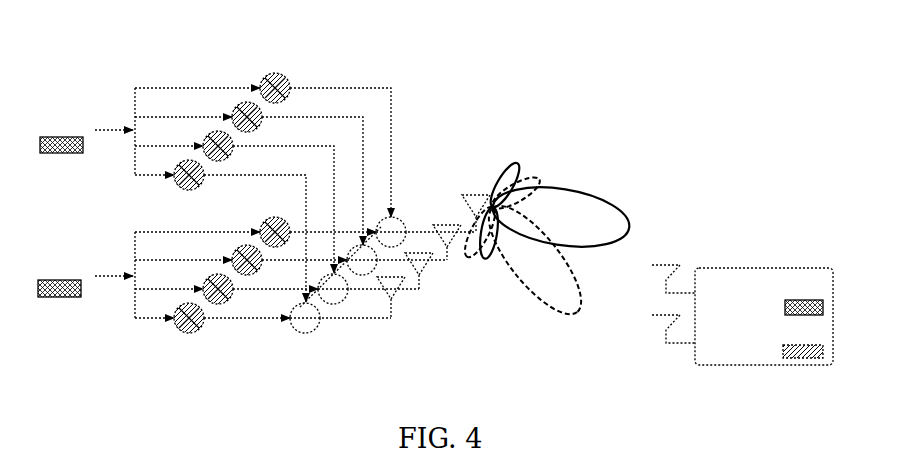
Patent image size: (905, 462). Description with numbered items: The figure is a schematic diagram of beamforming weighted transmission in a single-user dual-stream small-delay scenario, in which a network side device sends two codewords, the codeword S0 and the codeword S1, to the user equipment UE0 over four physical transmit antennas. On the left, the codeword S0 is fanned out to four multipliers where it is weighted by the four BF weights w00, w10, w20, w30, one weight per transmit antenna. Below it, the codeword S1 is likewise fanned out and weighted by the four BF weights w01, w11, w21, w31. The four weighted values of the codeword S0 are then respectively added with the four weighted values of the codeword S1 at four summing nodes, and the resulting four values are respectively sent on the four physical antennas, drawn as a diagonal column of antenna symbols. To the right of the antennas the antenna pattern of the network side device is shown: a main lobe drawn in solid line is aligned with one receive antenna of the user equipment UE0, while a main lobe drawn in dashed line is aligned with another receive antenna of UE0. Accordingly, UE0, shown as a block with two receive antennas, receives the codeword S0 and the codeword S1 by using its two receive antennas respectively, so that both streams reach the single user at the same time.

The codeword S0 is at (86, 132).
The codeword S1 is at (85, 275).
The user equipment UE0 is at (742, 315).
The BF weight w00 is at (276, 71).
The BF weight w10 is at (247, 100).
The BF weight w20 is at (218, 129).
The BF weight w30 is at (189, 158).
The BF weight w01 is at (275, 249).
The BF weight w11 is at (247, 277).
The BF weight w21 is at (218, 306).
The BF weight w31 is at (189, 335).